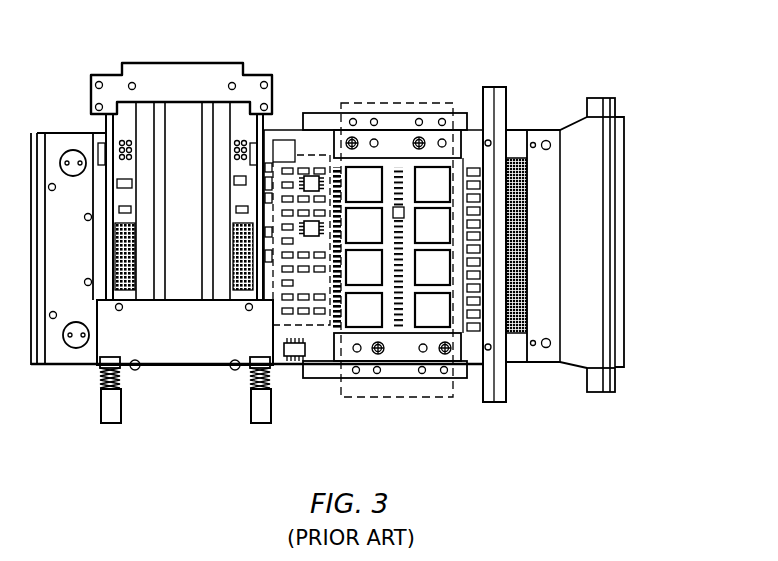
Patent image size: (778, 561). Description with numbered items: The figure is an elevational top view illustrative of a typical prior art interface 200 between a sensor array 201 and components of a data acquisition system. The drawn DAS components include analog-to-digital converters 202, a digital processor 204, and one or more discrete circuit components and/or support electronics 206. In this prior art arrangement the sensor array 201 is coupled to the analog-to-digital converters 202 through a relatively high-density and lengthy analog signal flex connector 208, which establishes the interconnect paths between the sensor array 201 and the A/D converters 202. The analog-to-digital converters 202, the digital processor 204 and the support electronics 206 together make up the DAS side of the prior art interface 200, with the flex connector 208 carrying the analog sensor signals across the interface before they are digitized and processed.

The prior art interface 200 is at (317, 34).
The sensor array 201 is at (624, 173).
The analog-to-digital converters 202 is at (395, 102).
The digital processor 204 is at (175, 333).
The discrete circuit components and/or support electronics 206 is at (313, 336).
The analog signal flex connector 208 is at (593, 235).